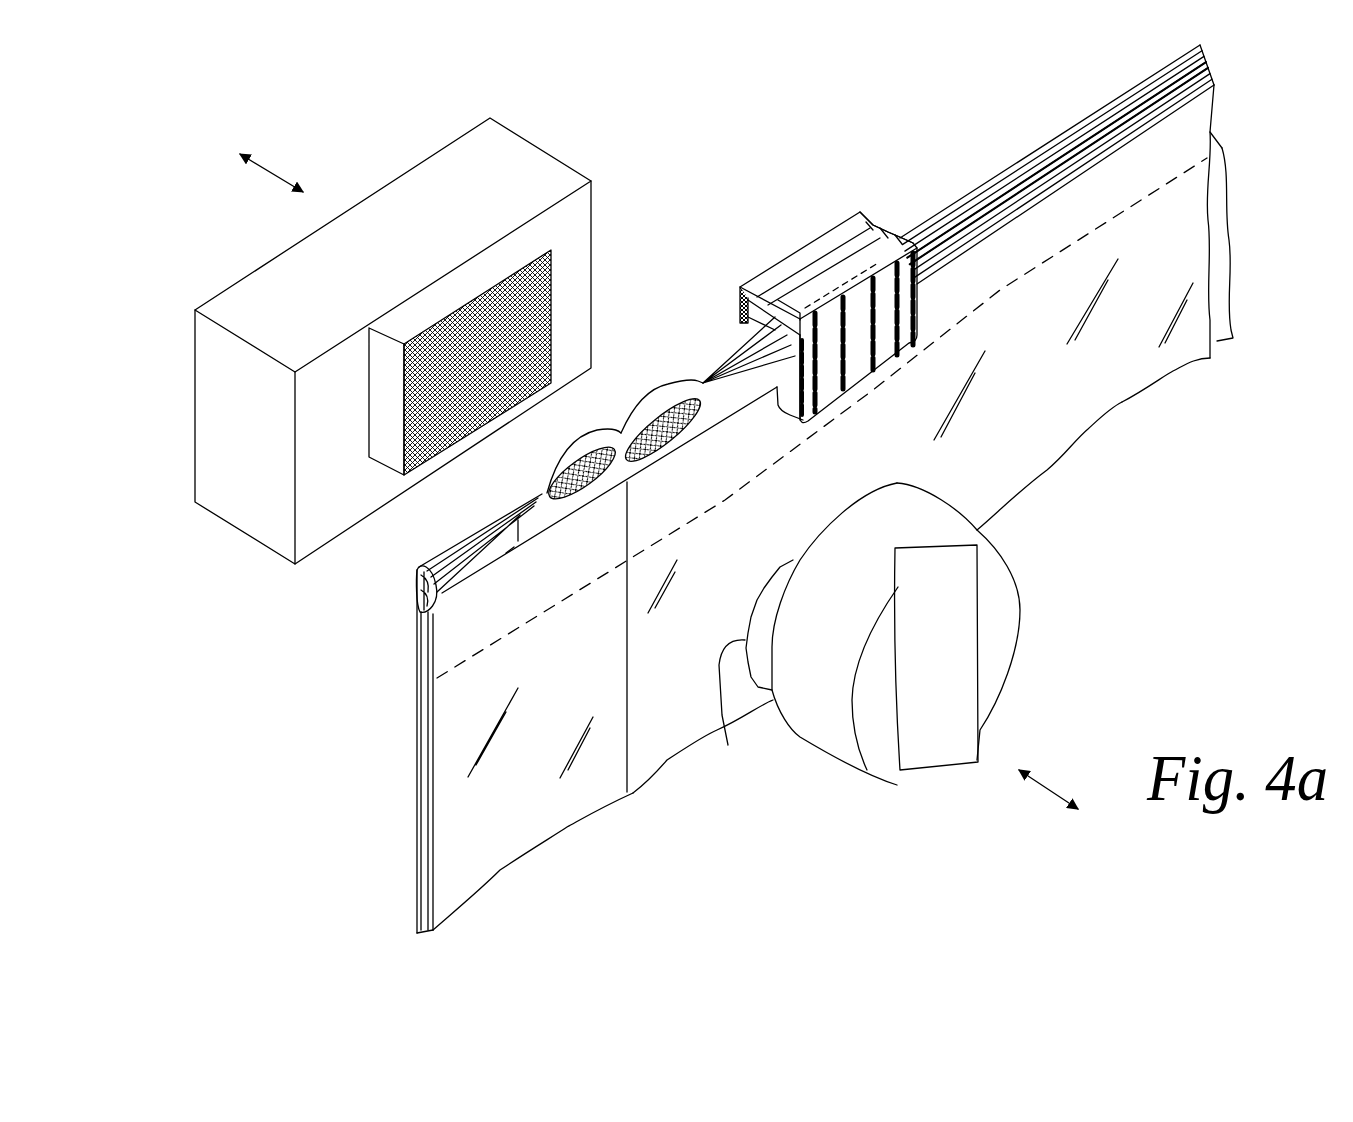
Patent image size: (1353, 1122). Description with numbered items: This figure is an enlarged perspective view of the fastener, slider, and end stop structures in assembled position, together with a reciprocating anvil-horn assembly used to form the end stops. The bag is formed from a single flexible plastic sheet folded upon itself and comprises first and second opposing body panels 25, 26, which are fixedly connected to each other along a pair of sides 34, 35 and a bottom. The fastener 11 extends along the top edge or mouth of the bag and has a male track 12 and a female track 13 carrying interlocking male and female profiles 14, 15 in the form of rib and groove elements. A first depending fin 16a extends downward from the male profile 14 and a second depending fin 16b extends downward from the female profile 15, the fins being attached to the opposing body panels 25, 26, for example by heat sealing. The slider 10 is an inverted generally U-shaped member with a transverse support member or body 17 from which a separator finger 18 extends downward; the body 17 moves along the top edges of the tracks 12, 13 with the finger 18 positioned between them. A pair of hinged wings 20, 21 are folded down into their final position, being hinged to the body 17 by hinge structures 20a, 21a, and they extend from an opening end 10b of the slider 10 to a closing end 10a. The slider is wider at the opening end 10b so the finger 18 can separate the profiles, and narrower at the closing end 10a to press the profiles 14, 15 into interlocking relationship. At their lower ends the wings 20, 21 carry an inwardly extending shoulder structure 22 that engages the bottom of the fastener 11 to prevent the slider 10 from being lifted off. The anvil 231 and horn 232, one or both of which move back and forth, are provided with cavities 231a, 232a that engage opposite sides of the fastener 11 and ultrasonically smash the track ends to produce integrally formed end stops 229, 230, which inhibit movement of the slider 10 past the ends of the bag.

The slider 10 is at (767, 255).
The closing end 10a is at (757, 313).
The opening end 10b is at (873, 208).
The fastener 11 is at (994, 150).
The male track 12 is at (736, 366).
The female track 13 is at (735, 377).
The male profile 14 is at (415, 593).
The female profile 15 is at (433, 613).
The first depending fin 16a is at (417, 655).
The second depending fin 16b is at (417, 670).
The transverse support member or body 17 is at (787, 267).
The separator finger 18 is at (790, 307).
The wing 20 is at (820, 392).
The hinge structure 20a is at (803, 320).
The wing 21 is at (743, 293).
The hinge structure 21a is at (753, 283).
The shoulder structure 22 is at (795, 428).
The first body panel 25 is at (1219, 279).
The second body panel 26 is at (1200, 352).
The side 34 is at (677, 750).
The side 35 is at (587, 805).
The end stop 229 is at (555, 482).
The end stop 230 is at (667, 397).
The anvil 231 is at (527, 158).
The anvil cavity 231a is at (553, 260).
The horn 232 is at (1007, 632).
The anvil cavity 232a is at (728, 745).